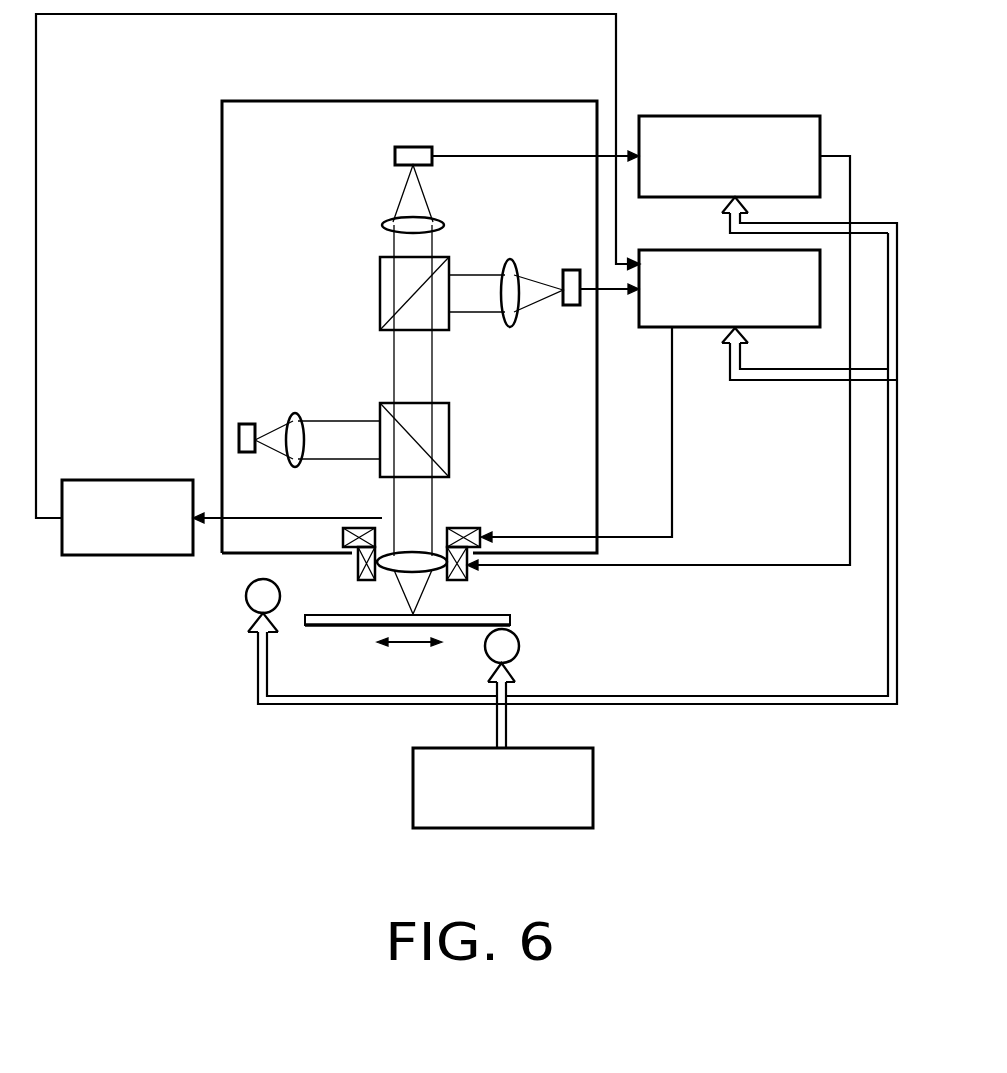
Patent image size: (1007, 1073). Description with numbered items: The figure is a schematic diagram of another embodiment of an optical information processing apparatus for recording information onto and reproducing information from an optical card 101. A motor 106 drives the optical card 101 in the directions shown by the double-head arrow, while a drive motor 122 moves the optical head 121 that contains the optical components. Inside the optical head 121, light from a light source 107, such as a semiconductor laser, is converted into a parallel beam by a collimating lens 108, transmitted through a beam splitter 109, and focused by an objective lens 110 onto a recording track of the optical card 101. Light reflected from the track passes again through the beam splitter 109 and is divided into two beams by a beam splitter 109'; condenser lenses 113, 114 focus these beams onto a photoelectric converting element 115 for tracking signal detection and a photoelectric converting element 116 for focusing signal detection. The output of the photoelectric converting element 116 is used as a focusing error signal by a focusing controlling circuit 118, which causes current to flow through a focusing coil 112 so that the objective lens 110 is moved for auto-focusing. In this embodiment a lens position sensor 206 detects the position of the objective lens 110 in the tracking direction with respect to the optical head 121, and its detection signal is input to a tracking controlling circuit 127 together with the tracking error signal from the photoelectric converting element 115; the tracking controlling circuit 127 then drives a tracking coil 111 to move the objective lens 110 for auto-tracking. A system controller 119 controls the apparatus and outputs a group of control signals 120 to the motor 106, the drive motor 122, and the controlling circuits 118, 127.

The optical card 101 is at (340, 626).
The motor 106 is at (519, 646).
The light source 107 is at (247, 452).
The collimating lens 108 is at (297, 465).
The beam splitter 109 is at (377, 413).
The beam splitter 109' is at (403, 293).
The objective lens 110 is at (410, 550).
The tracking coil 111 is at (480, 531).
The focusing coil 112 is at (467, 578).
The condenser lens 113 is at (508, 262).
The condenser lens 114 is at (393, 222).
The photoelectric converting element 115 is at (570, 270).
The photoelectric converting element 116 is at (432, 148).
The focusing controlling circuit 118 is at (752, 116).
The system controller 119 is at (593, 797).
The control signals 120 is at (788, 704).
The optical head 121 is at (450, 101).
The drive motor 122 is at (280, 596).
The tracking controlling circuit 127 is at (708, 328).
The lens position sensor 206 is at (135, 480).